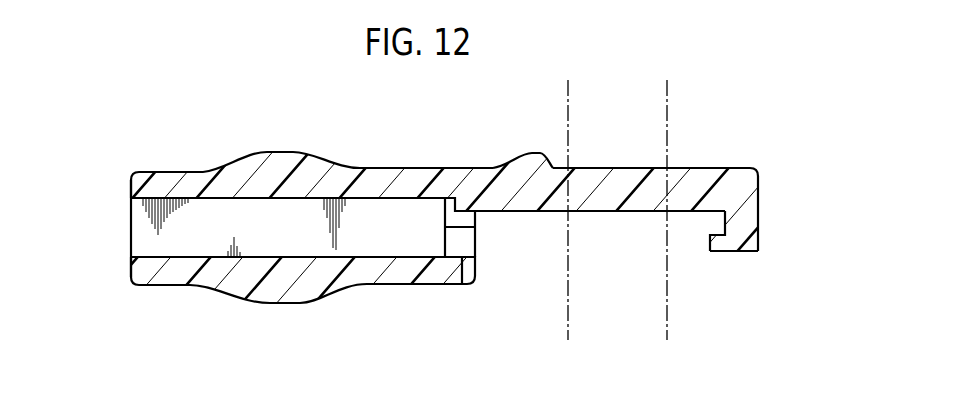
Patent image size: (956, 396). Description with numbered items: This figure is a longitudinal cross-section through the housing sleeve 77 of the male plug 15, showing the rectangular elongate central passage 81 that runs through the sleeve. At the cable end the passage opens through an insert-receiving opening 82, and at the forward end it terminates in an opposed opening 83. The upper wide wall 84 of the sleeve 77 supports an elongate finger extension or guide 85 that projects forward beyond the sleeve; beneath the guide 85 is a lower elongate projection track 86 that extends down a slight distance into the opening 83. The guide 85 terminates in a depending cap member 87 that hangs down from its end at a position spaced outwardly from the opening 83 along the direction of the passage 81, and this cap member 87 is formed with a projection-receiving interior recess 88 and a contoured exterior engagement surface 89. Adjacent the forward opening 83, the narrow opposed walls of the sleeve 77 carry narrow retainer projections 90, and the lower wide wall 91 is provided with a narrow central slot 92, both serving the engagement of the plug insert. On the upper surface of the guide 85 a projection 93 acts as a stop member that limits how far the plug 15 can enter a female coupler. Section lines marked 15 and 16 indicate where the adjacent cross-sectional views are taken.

The housing sleeve 77 is at (215, 171).
The central passage 81 is at (284, 236).
The insert-receiving opening 82 is at (129, 228).
The opposed opening 83 is at (478, 235).
The upper wide wall 84 is at (418, 176).
The guide 85 is at (698, 167).
The projection track 86 is at (585, 200).
The cap member 87 is at (748, 246).
The interior recess 88 is at (718, 221).
The exterior engagement surface 89 is at (759, 217).
The retainer projections 90 is at (458, 238).
The lower wide wall 91 is at (357, 272).
The central slot 92 is at (467, 266).
The projection 93 is at (539, 150).
The male plug 15 is at (580, 93).
The section line 16- 16 is at (653, 93).